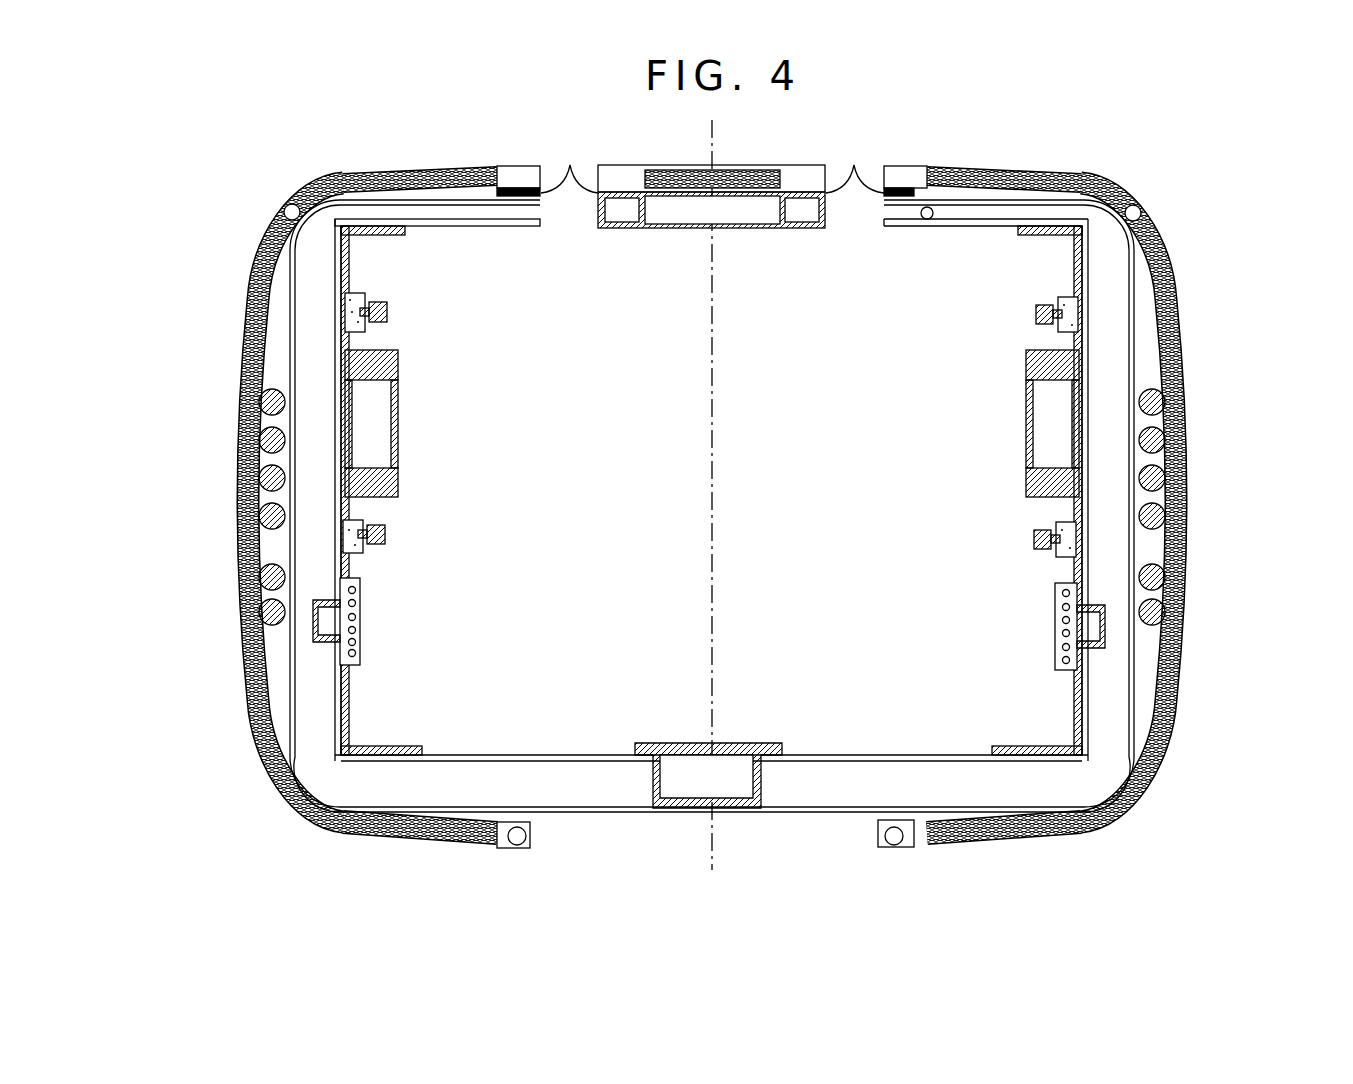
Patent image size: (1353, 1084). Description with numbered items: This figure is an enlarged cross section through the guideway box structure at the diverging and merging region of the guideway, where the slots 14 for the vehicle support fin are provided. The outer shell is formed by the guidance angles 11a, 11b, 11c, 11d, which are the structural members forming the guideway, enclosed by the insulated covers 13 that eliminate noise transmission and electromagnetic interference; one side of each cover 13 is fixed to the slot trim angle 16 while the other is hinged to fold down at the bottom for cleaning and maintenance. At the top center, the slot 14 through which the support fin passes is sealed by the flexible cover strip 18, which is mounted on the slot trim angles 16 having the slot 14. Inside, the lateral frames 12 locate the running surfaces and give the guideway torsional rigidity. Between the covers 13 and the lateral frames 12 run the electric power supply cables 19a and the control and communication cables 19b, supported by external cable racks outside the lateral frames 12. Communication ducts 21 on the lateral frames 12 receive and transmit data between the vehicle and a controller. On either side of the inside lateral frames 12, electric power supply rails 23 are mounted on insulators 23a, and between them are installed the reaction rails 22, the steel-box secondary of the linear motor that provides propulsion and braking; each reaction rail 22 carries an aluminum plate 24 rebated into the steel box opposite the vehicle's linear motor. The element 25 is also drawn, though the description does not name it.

The guidance angle 11a is at (345, 176).
The guidance angle 11b is at (1031, 232).
The guidance angle 11c is at (405, 748).
The guidance angle 11d is at (1017, 757).
The lateral frame 12 is at (1100, 758).
The cover 13 is at (246, 345).
The slot 14 is at (575, 207).
The slot trim angle 16 is at (540, 222).
The flexible cover strip 18 is at (553, 185).
The electric power supply cable 19a is at (238, 498).
The control and communication cable 19b is at (240, 610).
The communication duct 21 is at (362, 597).
The reaction rail 22 is at (393, 498).
The electric power supply rail 23 is at (388, 312).
The insulator 23a is at (352, 304).
The aluminum plate 24 is at (398, 425).
The inner liner 25 is at (243, 547).